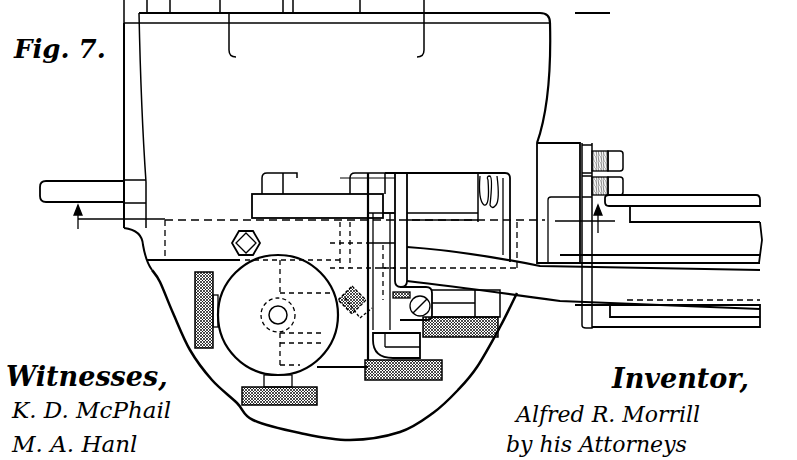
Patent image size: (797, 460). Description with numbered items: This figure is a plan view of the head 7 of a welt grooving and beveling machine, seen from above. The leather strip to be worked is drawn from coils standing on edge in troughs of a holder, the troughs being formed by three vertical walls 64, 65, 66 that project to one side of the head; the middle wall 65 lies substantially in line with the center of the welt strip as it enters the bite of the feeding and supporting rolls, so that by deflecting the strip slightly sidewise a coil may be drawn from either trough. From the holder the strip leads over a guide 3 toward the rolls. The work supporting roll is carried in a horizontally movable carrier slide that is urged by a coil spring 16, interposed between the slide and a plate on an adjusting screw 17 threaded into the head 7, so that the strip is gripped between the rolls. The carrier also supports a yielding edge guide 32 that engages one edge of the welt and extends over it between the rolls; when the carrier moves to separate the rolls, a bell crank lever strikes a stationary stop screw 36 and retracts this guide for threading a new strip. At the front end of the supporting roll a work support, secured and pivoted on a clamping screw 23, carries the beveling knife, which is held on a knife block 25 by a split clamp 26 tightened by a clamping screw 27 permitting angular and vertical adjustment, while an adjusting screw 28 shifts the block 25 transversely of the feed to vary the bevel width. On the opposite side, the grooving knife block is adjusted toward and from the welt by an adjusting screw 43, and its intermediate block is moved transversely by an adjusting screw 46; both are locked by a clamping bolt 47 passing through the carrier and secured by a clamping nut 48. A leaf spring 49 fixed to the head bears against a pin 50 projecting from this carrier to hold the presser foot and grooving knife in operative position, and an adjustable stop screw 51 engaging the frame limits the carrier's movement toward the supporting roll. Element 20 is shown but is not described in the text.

The guide 3 is at (540, 290).
The head 7 is at (530, 106).
The coil spring 16 is at (493, 173).
The adjusting screw 17 is at (618, 184).
The bar 20 is at (78, 183).
The clamping screw 23 is at (479, 340).
The knife block 25 is at (357, 337).
The split clamp 26 is at (356, 312).
The clamping screw 27 is at (345, 298).
The adjusting screw 28 is at (417, 381).
The yielding edge guide 32 is at (592, 6).
The stationary stop screw 36 is at (617, 155).
The adjusting screw 43 is at (197, 333).
The adjusting screw 46 is at (283, 405).
The clamping bolt 47 is at (268, 315).
The clamping nut 48 is at (240, 356).
The leaf spring 49 is at (320, 200).
The pin 50 is at (260, 185).
The adjustable stop screw 51 is at (232, 243).
The vertical wall 64 is at (710, 199).
The vertical wall 65 is at (683, 260).
The vertical wall 66 is at (687, 322).